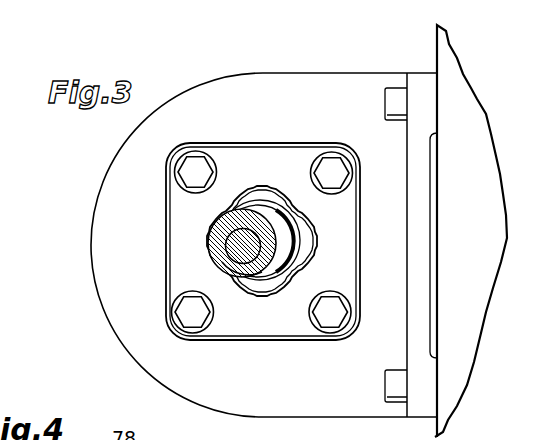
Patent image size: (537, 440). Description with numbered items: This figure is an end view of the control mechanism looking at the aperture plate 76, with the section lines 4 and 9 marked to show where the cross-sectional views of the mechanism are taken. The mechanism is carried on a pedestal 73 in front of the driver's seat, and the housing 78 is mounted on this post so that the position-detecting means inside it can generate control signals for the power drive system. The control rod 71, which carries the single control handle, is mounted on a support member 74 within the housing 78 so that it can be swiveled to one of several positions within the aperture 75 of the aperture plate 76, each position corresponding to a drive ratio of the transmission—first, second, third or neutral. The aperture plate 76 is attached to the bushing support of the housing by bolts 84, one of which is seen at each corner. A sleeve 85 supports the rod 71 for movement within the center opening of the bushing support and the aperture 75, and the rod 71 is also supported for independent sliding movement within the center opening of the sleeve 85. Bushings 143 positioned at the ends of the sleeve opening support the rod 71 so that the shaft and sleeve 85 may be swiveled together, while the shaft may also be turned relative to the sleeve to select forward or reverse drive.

The housing 78 is at (114, 157).
The support member 74 is at (375, 78).
The pedestal 73 is at (480, 99).
The aperture plate 76 is at (350, 219).
The bolts 84 is at (344, 319).
The aperture 75 is at (326, 256).
The bushings 143 is at (232, 231).
The control rod 71 is at (230, 252).
The sleeve 85 is at (246, 263).
The section line 9- 9 is at (350, 107).
The section line 4- 4 is at (69, 275).